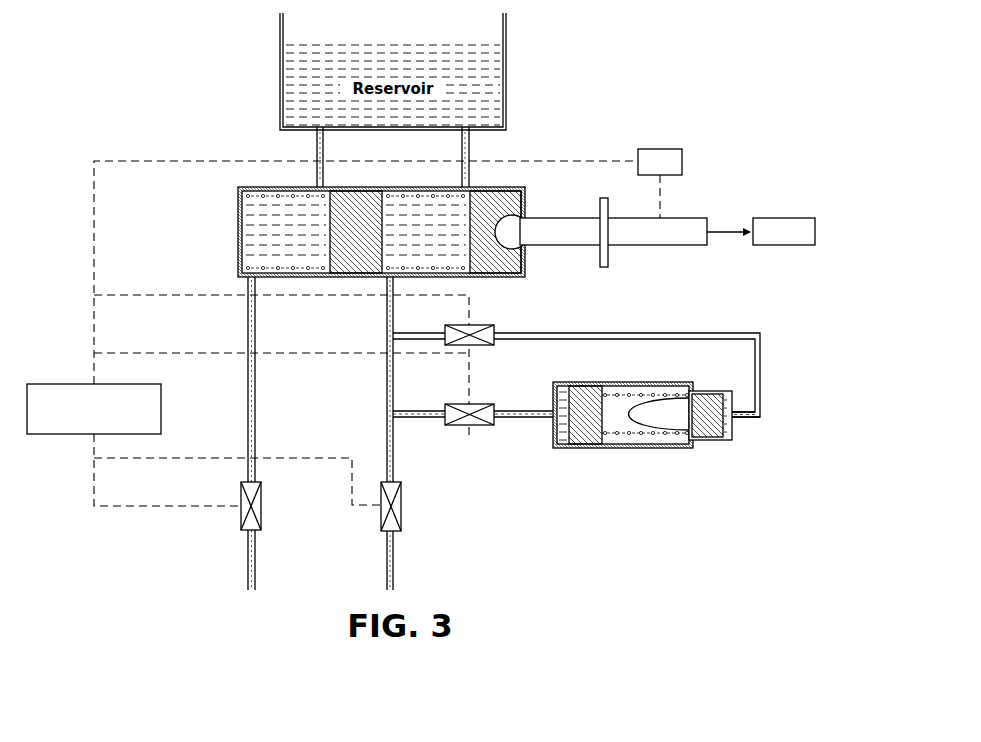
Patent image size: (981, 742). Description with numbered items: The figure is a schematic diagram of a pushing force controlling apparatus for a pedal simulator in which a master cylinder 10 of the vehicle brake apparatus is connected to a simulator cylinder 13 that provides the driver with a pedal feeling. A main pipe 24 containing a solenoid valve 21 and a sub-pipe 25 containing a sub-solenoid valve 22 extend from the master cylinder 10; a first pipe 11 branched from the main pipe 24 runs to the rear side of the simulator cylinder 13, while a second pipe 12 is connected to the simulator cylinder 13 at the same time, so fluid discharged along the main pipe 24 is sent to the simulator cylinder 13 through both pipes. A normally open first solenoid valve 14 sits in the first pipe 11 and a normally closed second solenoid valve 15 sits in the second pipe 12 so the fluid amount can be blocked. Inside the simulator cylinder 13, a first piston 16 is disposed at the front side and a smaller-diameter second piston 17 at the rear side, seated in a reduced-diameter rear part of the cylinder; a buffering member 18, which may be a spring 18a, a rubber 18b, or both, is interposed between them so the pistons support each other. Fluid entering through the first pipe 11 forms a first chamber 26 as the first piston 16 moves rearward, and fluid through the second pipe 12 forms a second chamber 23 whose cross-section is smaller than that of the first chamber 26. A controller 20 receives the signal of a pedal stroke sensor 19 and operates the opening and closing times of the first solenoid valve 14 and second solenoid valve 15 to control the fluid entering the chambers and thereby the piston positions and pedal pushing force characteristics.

The master cylinder 10 is at (500, 187).
The first pipe 11 is at (614, 332).
The second pipe 12 is at (522, 418).
The simulator cylinder 13 is at (640, 475).
The first solenoid valve 14 is at (485, 325).
The second solenoid valve 15 is at (470, 426).
The first piston 16 is at (708, 434).
The second piston 17 is at (588, 434).
The buffering member 18 is at (643, 480).
The spring 18a is at (612, 436).
The rubber 18b is at (657, 420).
The pedal stroke sensor 19 is at (661, 148).
The controller 20 is at (67, 384).
The solenoid valve 21 is at (401, 512).
The sub-solenoid valve 22 is at (261, 512).
The second chamber 23 is at (563, 420).
The main pipe 24 is at (385, 558).
The sub-pipe 25 is at (248, 576).
The first chamber 26 is at (735, 430).